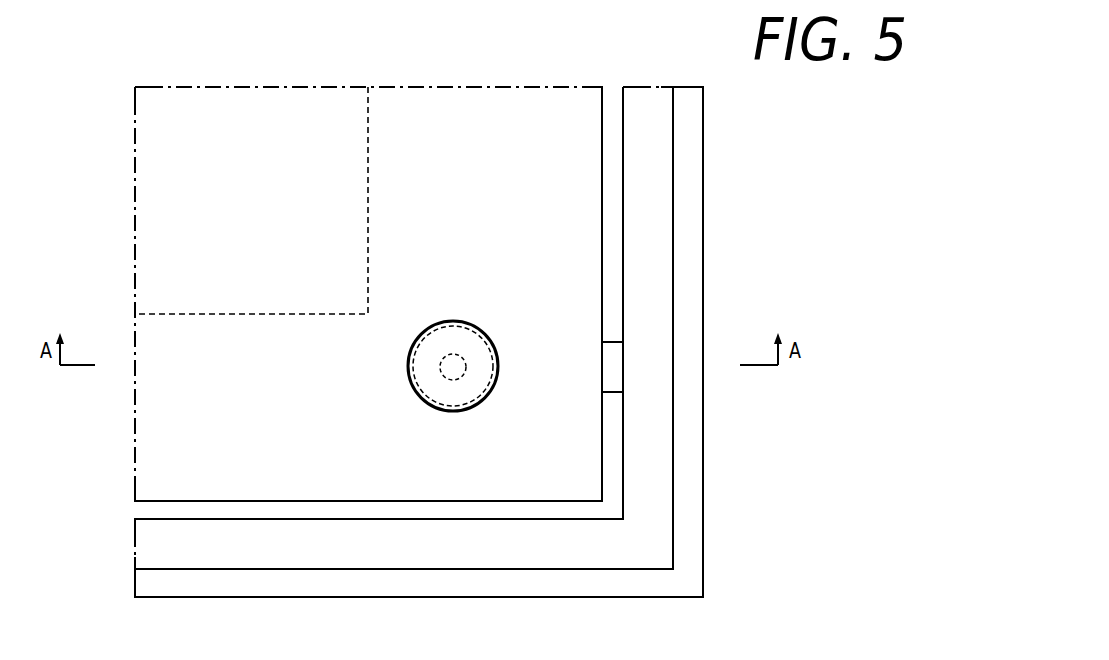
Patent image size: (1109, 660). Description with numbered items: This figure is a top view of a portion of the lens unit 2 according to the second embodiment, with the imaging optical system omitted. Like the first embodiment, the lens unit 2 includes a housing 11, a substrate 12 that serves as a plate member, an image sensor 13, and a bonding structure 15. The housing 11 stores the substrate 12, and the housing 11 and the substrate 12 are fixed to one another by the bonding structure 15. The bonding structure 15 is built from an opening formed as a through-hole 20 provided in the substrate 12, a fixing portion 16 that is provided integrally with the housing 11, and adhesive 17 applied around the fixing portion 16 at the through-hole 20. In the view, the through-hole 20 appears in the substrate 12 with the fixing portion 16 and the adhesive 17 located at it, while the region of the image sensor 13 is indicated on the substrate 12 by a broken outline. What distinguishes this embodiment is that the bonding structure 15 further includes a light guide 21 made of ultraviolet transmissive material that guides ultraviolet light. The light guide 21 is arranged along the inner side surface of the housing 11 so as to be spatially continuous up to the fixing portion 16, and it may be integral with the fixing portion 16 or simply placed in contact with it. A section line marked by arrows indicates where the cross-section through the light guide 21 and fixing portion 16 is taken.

The lens unit 2 is at (437, 58).
The housing 11 is at (687, 175).
The substrate 12 is at (197, 423).
The image sensor 13 is at (342, 195).
The bonding structure 15 is at (436, 354).
The fixing portion 16 is at (483, 400).
The adhesive 17 is at (416, 392).
The through-hole 20 is at (453, 371).
The light guide 21 is at (647, 118).